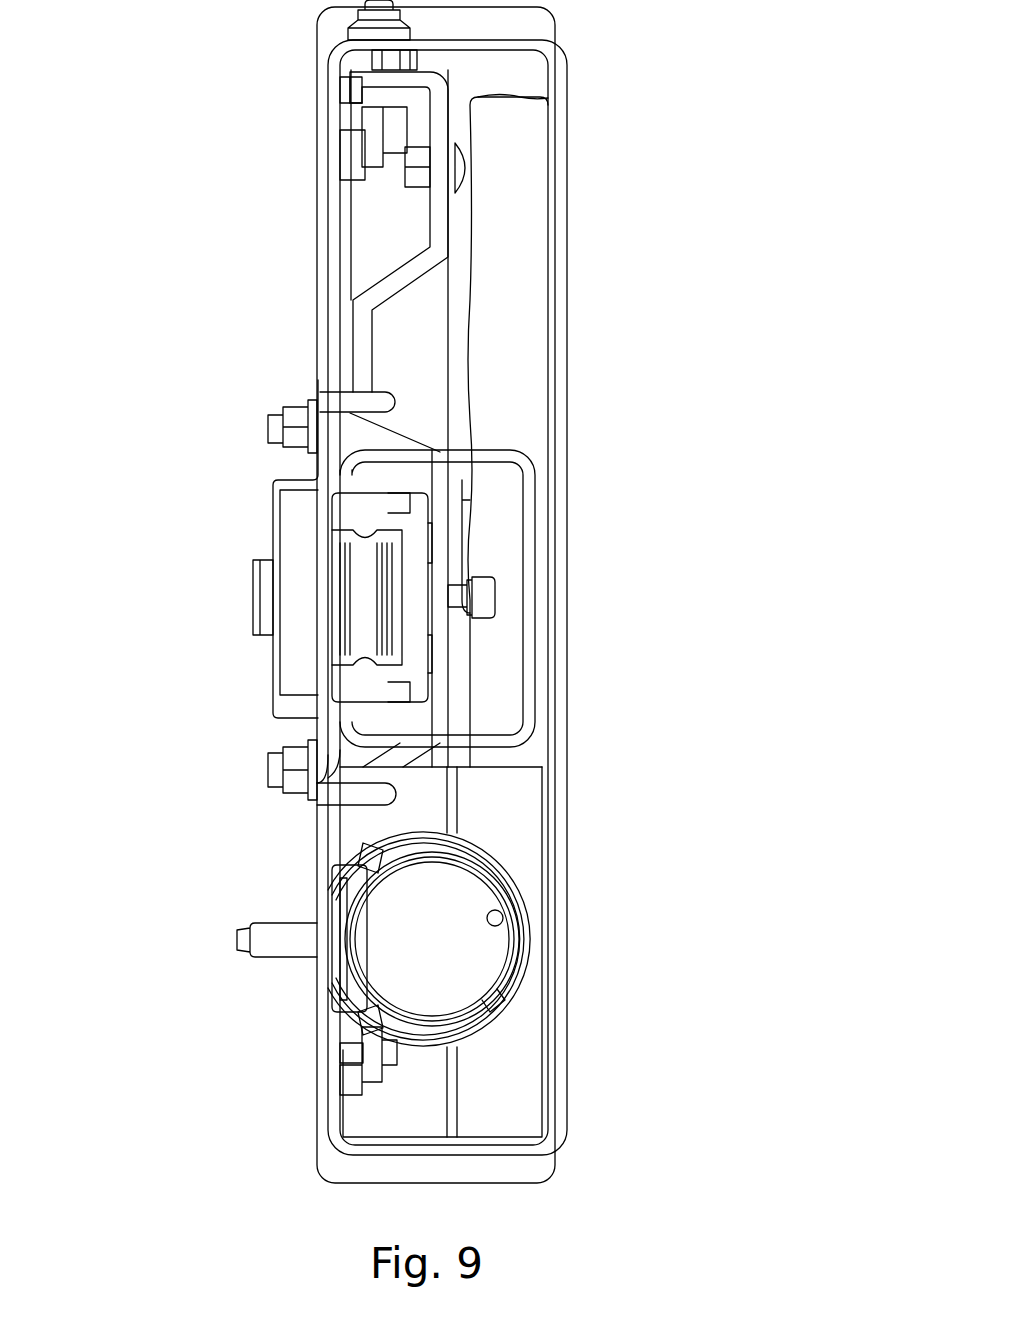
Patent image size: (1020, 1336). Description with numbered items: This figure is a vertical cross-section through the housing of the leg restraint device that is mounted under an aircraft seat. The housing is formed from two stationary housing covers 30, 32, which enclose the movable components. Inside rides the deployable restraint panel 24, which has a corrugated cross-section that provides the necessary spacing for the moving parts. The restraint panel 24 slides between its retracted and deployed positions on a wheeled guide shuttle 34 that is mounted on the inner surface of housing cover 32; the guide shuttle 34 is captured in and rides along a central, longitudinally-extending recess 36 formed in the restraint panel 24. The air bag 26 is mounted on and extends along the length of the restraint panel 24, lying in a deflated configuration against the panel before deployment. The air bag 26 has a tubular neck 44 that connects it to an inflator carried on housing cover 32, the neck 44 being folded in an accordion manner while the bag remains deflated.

The restraint panel 24 is at (390, 283).
The air bag 26 is at (528, 165).
The housing cover 30 is at (322, 268).
The housing cover 32 is at (565, 297).
The guide shuttle 34 is at (362, 510).
The recess 36 is at (440, 530).
The tubular neck 44 is at (493, 927).